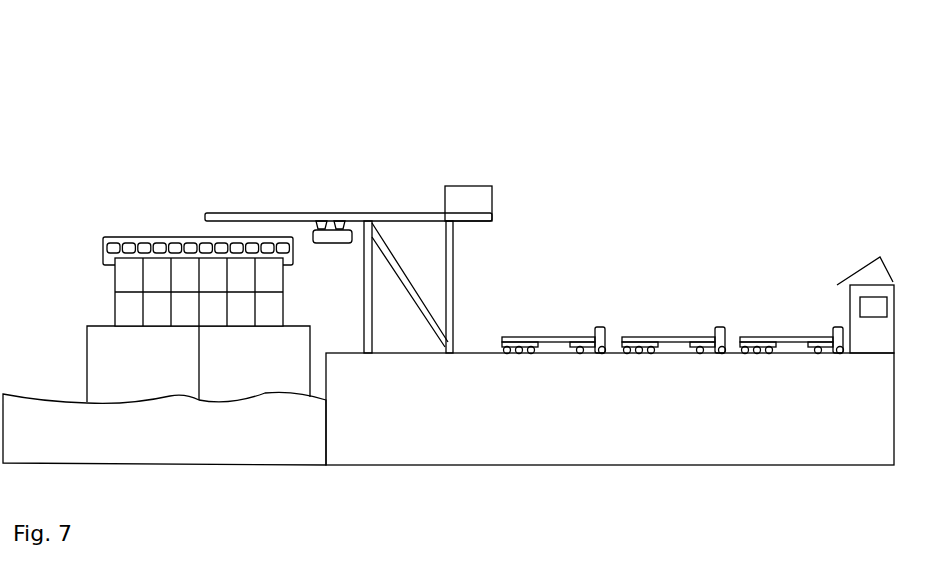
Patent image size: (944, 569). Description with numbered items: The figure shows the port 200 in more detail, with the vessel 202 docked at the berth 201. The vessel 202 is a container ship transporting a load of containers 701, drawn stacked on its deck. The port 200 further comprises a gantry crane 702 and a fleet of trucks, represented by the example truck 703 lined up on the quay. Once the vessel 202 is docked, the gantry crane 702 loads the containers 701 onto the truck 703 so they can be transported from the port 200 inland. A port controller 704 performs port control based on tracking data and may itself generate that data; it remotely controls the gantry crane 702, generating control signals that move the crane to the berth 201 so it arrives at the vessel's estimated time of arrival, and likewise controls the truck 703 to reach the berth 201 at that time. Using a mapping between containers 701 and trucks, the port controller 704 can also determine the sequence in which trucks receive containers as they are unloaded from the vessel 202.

The port 200 is at (72, 56).
The berth 201 is at (406, 122).
The vessel 202 is at (100, 383).
The containers 701 is at (112, 292).
The gantry crane 702 is at (492, 190).
The truck 703 is at (558, 337).
The port controller 704 is at (868, 297).